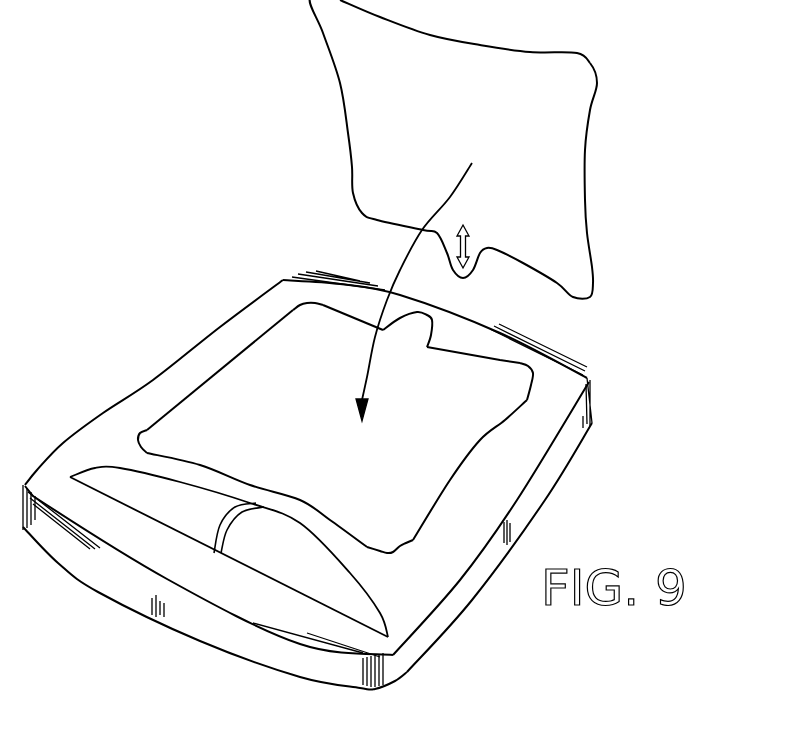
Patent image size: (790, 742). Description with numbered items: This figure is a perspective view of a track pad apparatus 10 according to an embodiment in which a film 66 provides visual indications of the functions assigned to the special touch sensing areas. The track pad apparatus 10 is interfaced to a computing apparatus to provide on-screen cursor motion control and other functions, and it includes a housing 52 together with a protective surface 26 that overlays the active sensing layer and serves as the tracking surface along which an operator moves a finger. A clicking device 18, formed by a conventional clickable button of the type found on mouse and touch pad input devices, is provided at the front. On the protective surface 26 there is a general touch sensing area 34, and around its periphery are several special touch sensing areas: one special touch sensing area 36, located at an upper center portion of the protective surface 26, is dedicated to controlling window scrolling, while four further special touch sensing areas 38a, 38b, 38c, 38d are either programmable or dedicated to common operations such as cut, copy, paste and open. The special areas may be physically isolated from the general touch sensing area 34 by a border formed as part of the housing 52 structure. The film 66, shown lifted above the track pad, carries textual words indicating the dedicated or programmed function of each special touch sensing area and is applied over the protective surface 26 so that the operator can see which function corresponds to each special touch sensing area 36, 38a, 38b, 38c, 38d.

The track pad apparatus 10 is at (641, 366).
The clicking device 18 is at (243, 545).
The protective surface 26 is at (320, 438).
The general touch sensing area 34 is at (438, 465).
The special touch sensing area 36 is at (433, 327).
The special touch sensing area 38a is at (530, 377).
The special touch sensing area 38b is at (398, 548).
The special touch sensing area 38c is at (140, 433).
The special touch sensing area 38d is at (306, 311).
The housing 52 is at (546, 460).
The film 66 is at (587, 203).